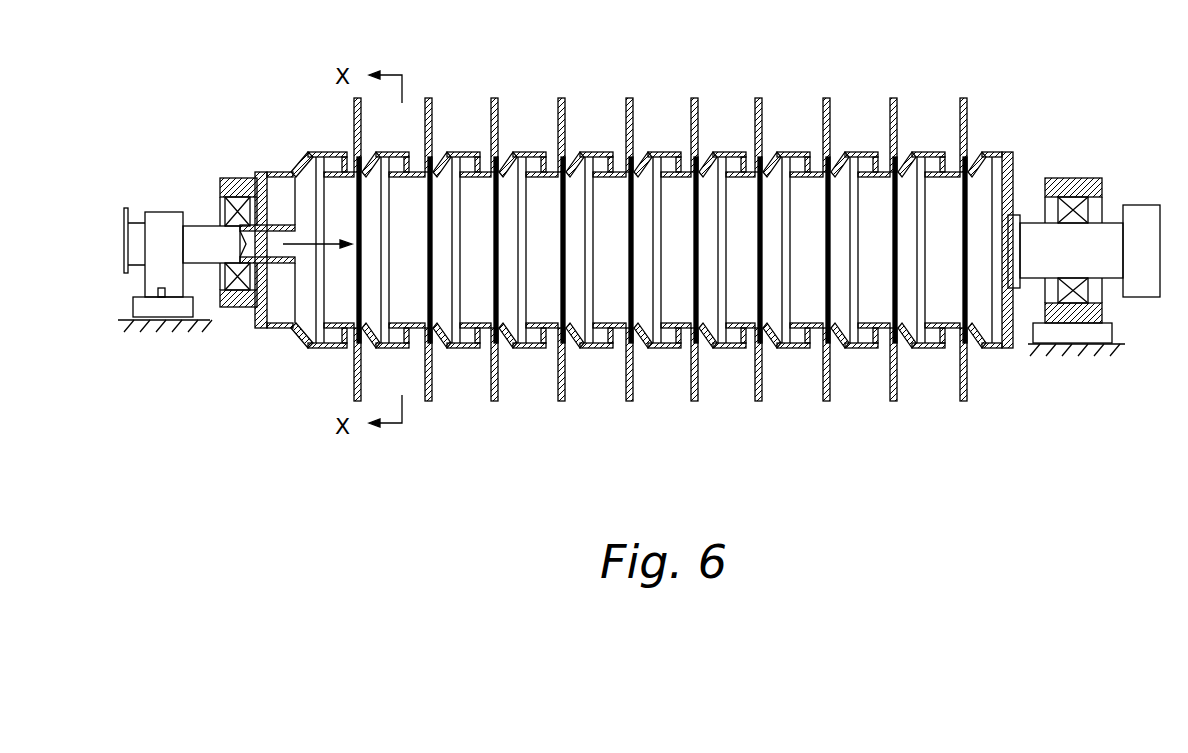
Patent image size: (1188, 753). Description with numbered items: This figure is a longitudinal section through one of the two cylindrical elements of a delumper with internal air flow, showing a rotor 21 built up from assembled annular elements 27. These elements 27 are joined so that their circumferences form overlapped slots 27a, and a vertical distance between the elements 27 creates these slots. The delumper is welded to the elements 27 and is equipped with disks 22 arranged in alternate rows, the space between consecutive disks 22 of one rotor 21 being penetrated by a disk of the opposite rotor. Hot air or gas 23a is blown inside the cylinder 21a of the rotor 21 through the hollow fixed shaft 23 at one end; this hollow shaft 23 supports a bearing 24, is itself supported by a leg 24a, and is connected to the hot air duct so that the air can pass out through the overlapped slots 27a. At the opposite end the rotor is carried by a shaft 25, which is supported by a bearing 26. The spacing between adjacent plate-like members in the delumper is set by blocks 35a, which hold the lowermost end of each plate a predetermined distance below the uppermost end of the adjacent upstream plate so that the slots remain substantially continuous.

The rotor 21 is at (634, 307).
The cylinder 21a is at (810, 287).
The disks 22 is at (424, 120).
The hollow fixed shaft 23 is at (198, 227).
The hot air or gas 23a is at (486, 136).
The bearing 24 is at (228, 178).
The leg 24a is at (152, 275).
The shaft 25 is at (1107, 263).
The bearing 26 is at (1077, 182).
The annular elements 27 is at (660, 150).
The overlapped slots 27a is at (953, 145).
The blocks 35a is at (797, 153).